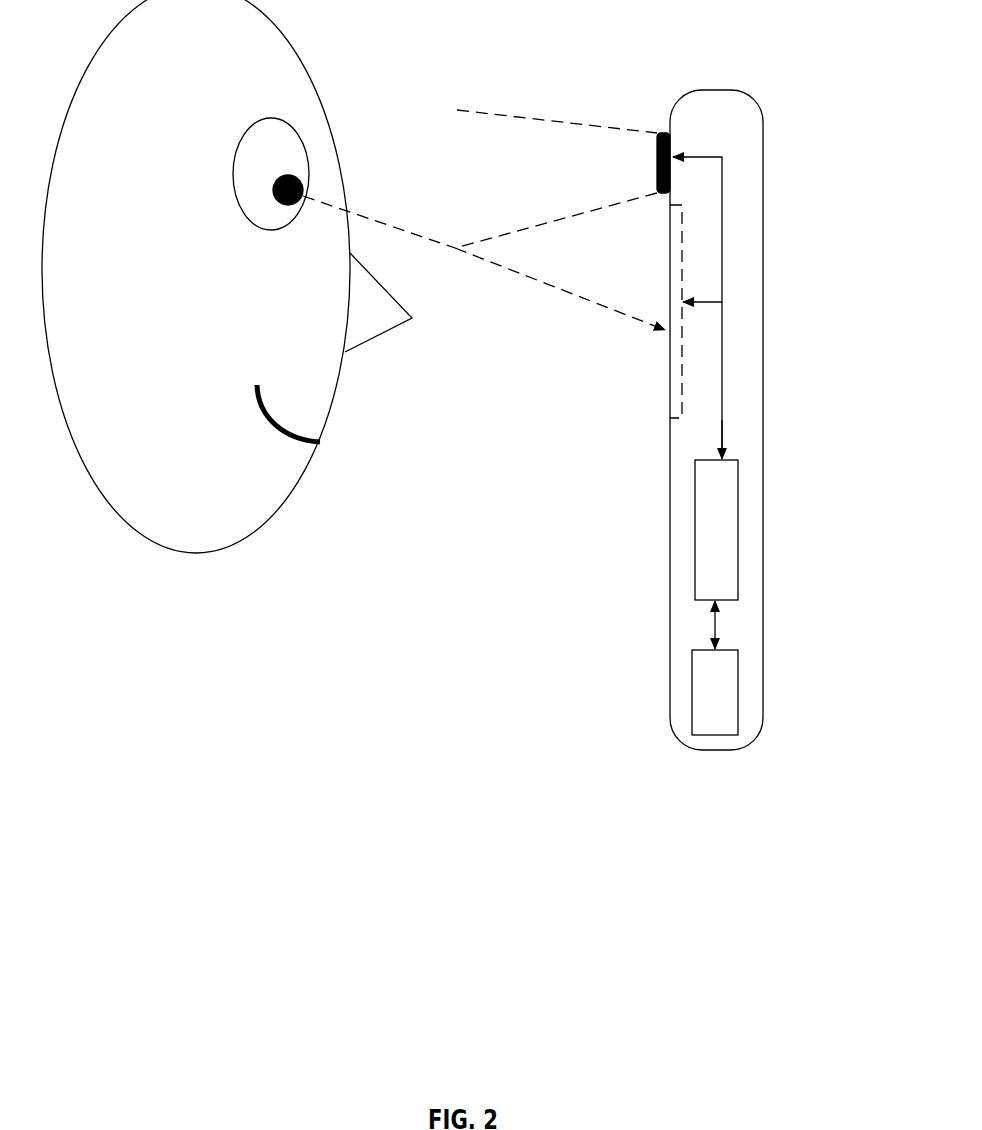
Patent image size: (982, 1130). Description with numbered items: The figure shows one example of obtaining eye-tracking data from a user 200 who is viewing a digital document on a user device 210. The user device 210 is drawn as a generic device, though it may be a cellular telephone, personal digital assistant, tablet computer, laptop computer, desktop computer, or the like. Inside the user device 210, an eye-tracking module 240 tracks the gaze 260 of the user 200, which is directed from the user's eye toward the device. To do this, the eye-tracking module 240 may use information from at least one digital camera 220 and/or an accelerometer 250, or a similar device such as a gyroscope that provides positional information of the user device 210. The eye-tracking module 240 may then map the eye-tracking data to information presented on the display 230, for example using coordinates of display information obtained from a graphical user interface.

The user 200 is at (305, 468).
The user device 210 is at (715, 750).
The digital camera 220 is at (657, 155).
The display 230 is at (670, 383).
The eye-tracking module 240 is at (738, 518).
The accelerometer 250 is at (738, 683).
The gaze 260 is at (413, 235).